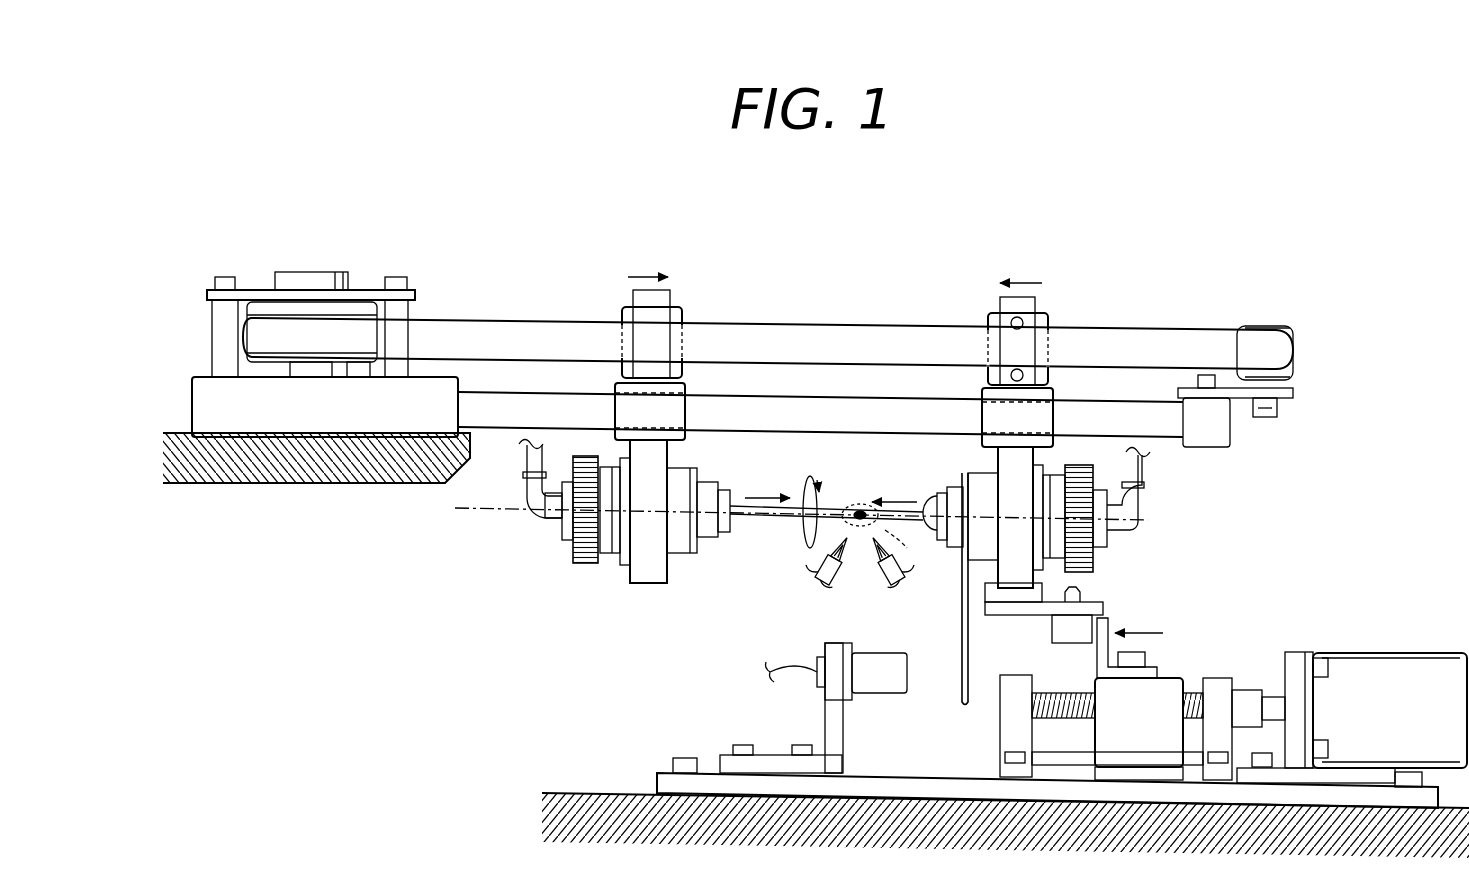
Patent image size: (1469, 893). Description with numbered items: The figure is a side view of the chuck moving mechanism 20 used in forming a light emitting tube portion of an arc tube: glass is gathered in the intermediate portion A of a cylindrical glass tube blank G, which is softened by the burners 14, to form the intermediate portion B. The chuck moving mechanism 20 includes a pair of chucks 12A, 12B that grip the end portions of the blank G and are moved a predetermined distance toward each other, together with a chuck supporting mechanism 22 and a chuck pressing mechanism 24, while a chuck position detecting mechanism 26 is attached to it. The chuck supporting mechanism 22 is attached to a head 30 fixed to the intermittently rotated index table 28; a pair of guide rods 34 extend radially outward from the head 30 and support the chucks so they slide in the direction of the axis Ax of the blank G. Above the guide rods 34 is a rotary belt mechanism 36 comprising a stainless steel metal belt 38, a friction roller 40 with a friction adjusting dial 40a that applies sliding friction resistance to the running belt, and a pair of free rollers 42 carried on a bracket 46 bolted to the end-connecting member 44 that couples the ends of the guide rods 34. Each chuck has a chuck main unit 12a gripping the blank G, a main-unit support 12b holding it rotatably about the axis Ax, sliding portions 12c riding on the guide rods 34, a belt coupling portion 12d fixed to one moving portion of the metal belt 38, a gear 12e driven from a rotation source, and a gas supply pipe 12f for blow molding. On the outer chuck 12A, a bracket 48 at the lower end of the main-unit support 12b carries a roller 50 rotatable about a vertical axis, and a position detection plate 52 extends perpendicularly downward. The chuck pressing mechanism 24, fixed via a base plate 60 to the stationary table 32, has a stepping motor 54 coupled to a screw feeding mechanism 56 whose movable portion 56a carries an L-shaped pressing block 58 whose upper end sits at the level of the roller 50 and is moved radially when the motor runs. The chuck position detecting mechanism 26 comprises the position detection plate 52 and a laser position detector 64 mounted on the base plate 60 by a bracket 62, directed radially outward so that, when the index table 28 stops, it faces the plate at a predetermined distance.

The chuck moving mechanism 20 is at (1324, 192).
The chuck supporting mechanism 22 is at (924, 260).
The chuck pressing mechanism 24 is at (1327, 589).
The chuck position detecting mechanism 26 is at (923, 748).
The index table 28 is at (364, 490).
The head 30 is at (305, 413).
The stationary table 32 is at (596, 790).
The guide rods 34 is at (838, 412).
The rotary belt mechanism 36 is at (1292, 307).
The metal belt 38 is at (765, 340).
The friction roller 40 is at (350, 313).
The friction adjusting dial 40a is at (302, 278).
The free rollers 42 is at (1257, 328).
The end-connecting member 44 is at (1213, 437).
The bracket 46 is at (1278, 403).
The bracket 48 is at (1092, 604).
The roller 50 is at (1060, 632).
The position detection plate 52 is at (960, 588).
The stepping motor 54 is at (1392, 667).
The screw feeding mechanism 56 is at (1202, 664).
The movable portion 56a is at (1142, 757).
The pressing block 58 is at (1107, 628).
The base plate 60 is at (664, 778).
The bracket 62 is at (830, 720).
The laser position detector 64 is at (882, 690).
The chuck main unit 12a is at (705, 547).
The main-unit support 12b is at (652, 577).
The sliding portions 12c is at (630, 412).
The belt coupling portion 12d is at (628, 318).
The gear 12e is at (585, 560).
The gas supply pipe 12f is at (536, 518).
The chuck 12A is at (938, 478).
The chuck 12B is at (724, 474).
The burners 14 is at (895, 578).
The intermediate portion A is at (909, 545).
The intermediate portion B is at (858, 505).
The cylindrical glass tube blank G is at (793, 522).
The axis Ax is at (485, 511).